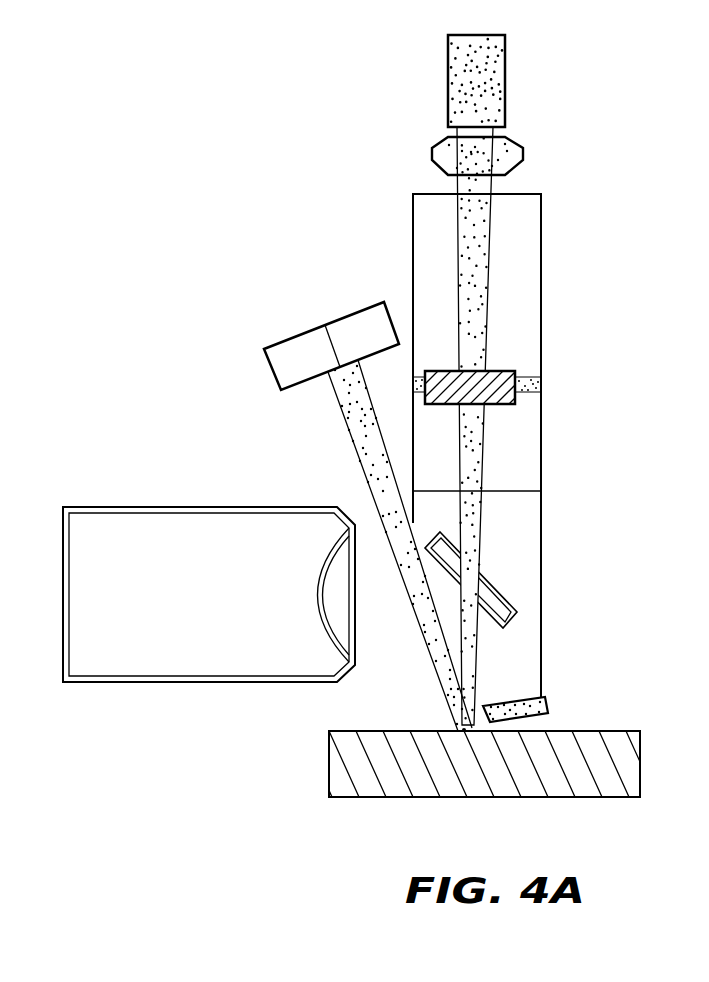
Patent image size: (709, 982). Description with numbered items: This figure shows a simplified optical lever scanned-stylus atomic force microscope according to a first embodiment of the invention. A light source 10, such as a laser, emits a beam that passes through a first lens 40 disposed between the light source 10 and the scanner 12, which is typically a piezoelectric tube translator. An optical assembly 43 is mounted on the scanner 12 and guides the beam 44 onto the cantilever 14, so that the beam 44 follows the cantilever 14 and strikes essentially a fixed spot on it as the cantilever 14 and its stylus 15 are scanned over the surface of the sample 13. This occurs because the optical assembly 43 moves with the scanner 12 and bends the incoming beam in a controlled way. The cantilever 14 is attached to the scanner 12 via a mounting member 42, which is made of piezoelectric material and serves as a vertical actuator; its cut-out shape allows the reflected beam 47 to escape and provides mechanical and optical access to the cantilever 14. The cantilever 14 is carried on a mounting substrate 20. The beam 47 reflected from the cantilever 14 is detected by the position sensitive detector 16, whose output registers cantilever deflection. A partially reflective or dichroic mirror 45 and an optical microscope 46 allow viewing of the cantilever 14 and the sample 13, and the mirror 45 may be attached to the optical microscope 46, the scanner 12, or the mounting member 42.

The light source 10 is at (450, 88).
The first lens 40 is at (437, 153).
The scanner 12 is at (541, 262).
The optical assembly 43 is at (503, 371).
The beam 44 is at (480, 442).
The mounting member 42 is at (541, 520).
The dichroic mirror 45 is at (500, 597).
The mounting substrate 20 is at (549, 700).
The position sensitive detector 16 is at (322, 326).
The reflected beam 47 is at (348, 427).
The optical microscope 46 is at (162, 507).
The stylus 15 is at (462, 728).
The cantilever 14 is at (473, 728).
The sample 13 is at (329, 757).